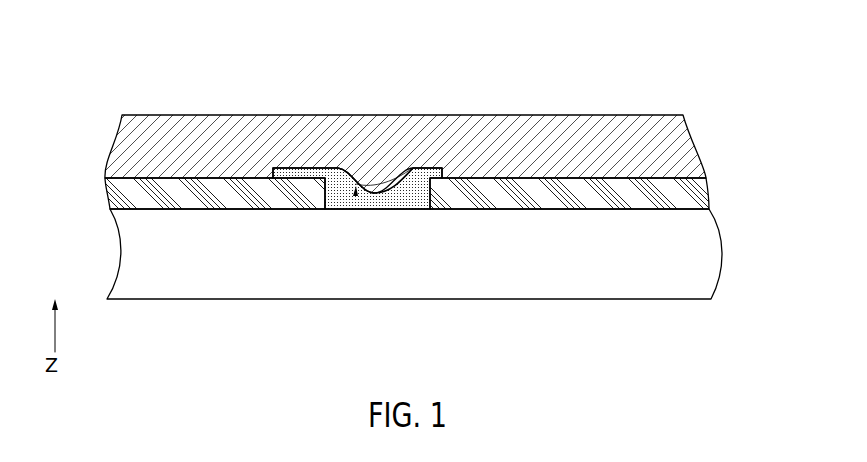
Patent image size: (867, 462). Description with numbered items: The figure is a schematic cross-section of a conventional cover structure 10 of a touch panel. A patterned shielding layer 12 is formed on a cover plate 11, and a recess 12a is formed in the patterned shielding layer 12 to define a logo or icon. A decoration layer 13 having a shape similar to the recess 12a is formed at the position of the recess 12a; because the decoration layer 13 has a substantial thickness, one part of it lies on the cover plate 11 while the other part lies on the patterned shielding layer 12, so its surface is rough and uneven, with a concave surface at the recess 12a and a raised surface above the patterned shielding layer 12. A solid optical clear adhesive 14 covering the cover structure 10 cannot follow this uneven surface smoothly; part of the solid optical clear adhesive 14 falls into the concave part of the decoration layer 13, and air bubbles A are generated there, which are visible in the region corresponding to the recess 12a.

The cover structure 10 is at (685, 64).
The cover plate 11 is at (128, 253).
The patterned shielding layer 12 is at (108, 193).
The recess 12a is at (432, 209).
The decoration layer 13 is at (419, 210).
The solid optical clear adhesive 14 is at (128, 137).
The air bubbles A is at (356, 193).